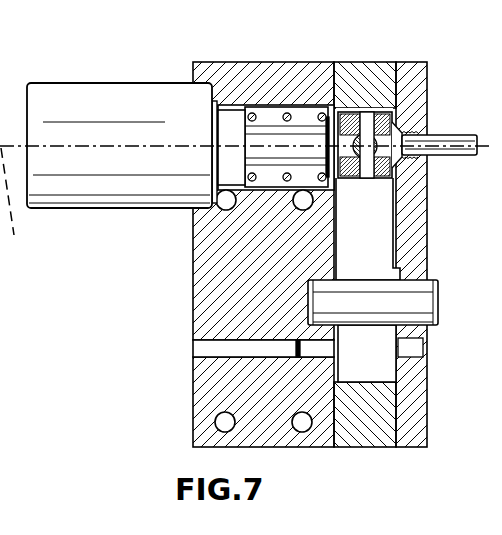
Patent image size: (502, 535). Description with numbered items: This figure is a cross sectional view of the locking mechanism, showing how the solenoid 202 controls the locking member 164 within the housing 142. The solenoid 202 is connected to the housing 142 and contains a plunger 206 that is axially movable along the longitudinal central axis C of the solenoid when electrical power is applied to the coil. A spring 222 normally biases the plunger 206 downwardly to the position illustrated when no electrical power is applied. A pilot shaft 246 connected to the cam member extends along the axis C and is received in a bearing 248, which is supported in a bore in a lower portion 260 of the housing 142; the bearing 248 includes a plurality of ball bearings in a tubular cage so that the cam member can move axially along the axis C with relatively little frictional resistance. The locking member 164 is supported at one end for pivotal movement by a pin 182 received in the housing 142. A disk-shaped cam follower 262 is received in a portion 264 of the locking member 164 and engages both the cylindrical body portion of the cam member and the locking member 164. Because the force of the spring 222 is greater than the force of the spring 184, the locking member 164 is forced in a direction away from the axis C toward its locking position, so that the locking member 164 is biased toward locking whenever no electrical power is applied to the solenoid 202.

The housing 142 is at (220, 390).
The locking member 164 is at (373, 258).
The pin 182 is at (402, 303).
The spring 184 is at (353, 372).
The solenoid 202 is at (62, 212).
The plunger 206 is at (257, 158).
The spring 222 is at (287, 178).
The pilot shaft 246 is at (455, 152).
The bearing 248 is at (427, 135).
The lower portion 260 is at (410, 430).
The cam follower 262 is at (378, 116).
The portion 264 is at (350, 182).
The longitudinal central axis C is at (10, 203).